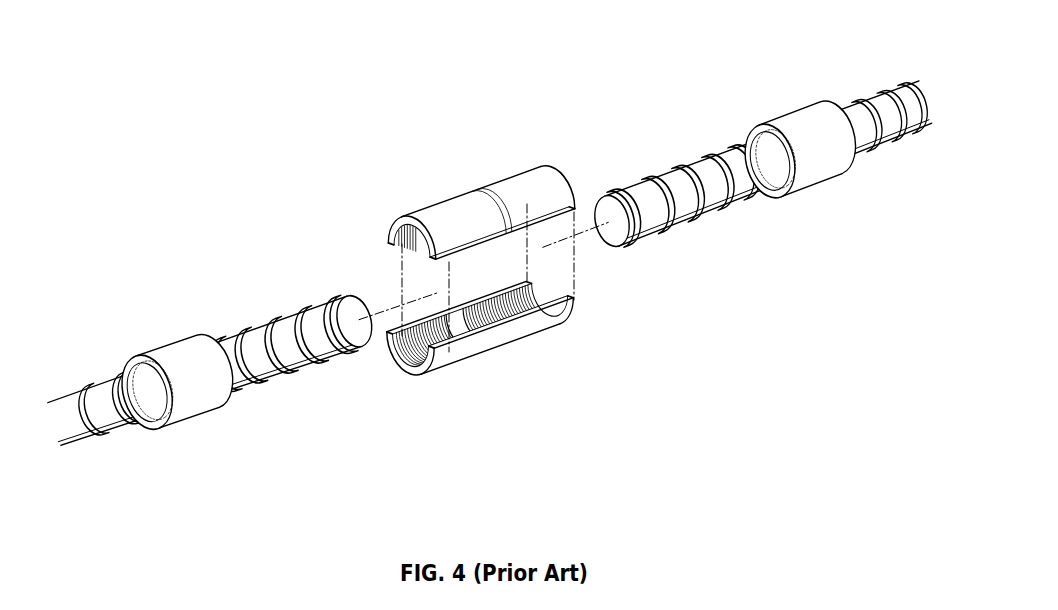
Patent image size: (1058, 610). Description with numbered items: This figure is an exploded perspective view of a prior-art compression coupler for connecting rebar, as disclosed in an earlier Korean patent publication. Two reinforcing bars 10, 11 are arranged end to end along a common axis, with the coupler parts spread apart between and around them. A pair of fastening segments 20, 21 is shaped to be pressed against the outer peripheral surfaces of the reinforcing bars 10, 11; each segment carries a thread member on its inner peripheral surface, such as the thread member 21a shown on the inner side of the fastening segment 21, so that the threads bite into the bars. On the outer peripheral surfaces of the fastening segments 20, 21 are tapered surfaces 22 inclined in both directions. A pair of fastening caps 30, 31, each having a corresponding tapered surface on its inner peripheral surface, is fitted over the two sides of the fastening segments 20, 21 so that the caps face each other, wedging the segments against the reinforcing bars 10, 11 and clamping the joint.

The reinforcing bar 10 is at (322, 304).
The reinforcing bar 11 is at (664, 177).
The fastening segment 20 is at (428, 188).
The fastening segment 21 is at (513, 375).
The thread member 21a is at (390, 348).
The tapered surface 22 is at (519, 183).
The fastening cap 30 is at (150, 326).
The fastening cap 31 is at (767, 92).